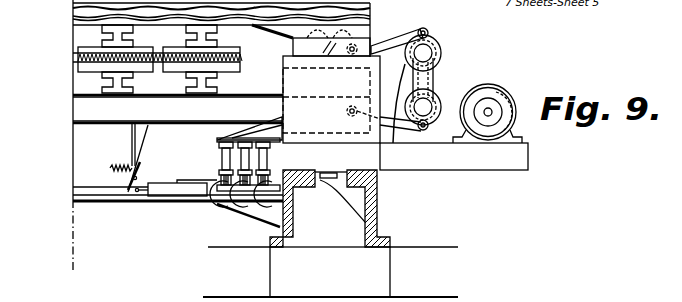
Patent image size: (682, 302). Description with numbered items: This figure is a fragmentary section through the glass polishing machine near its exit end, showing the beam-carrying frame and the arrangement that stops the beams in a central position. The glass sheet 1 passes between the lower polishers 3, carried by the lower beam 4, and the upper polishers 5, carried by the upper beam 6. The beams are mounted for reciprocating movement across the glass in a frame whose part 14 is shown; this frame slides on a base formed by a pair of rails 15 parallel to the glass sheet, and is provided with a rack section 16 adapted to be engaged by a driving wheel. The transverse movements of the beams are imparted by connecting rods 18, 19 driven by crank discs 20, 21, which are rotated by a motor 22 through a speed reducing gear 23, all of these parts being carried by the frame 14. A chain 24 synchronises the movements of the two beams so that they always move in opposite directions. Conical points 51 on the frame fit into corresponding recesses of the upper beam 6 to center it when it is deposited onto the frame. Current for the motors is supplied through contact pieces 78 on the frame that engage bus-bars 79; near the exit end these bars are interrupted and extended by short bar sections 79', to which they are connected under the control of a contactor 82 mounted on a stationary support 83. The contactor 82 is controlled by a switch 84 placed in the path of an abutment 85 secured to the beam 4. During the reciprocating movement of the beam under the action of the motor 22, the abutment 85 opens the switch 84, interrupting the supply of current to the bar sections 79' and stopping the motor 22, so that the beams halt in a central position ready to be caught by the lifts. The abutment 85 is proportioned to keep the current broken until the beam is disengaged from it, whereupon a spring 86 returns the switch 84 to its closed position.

The glass sheet 1 is at (80, 57).
The lower polishers 3 is at (80, 68).
The lower beam 4 is at (182, 115).
The upper polishers 5 is at (80, 47).
The upper beam 6 is at (253, 19).
The frame part 14 is at (457, 160).
The rails 15 is at (379, 190).
The rack section 16 is at (379, 224).
The connecting rod 18 is at (395, 100).
The connecting rod 19 is at (395, 40).
The crank disc 20 is at (436, 104).
The crank disc 21 is at (440, 45).
The motor 22 is at (511, 98).
The speed reducing gear 23 is at (443, 128).
The chain 24 is at (437, 78).
The conical points 51 is at (311, 41).
The contact pieces 78 is at (222, 162).
The bus-bars 79 is at (227, 207).
The short bar sections 79' is at (248, 225).
The contactor 82 is at (170, 196).
The stationary support 83 is at (118, 202).
The switch 84 is at (127, 184).
The abutment 85 is at (132, 142).
The spring 86 is at (110, 168).